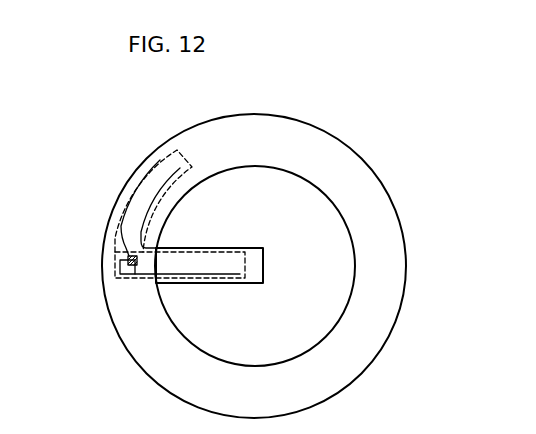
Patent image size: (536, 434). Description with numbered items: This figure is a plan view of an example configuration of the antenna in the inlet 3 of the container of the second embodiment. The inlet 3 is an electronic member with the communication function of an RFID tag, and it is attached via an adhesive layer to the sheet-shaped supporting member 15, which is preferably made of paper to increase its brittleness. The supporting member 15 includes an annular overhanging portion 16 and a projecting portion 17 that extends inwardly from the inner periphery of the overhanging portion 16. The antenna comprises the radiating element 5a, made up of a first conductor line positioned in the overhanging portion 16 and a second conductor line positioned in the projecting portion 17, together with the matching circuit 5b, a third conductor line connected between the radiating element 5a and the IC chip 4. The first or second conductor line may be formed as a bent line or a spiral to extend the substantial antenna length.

The overhanging portion 16 is at (318, 127).
The supporting member 15 is at (355, 381).
The projecting portion 17 is at (247, 248).
The inlet 3 is at (130, 192).
The radiating element 5a is at (123, 222).
The matching circuit 5b is at (142, 229).
The IC chip 4 is at (134, 256).